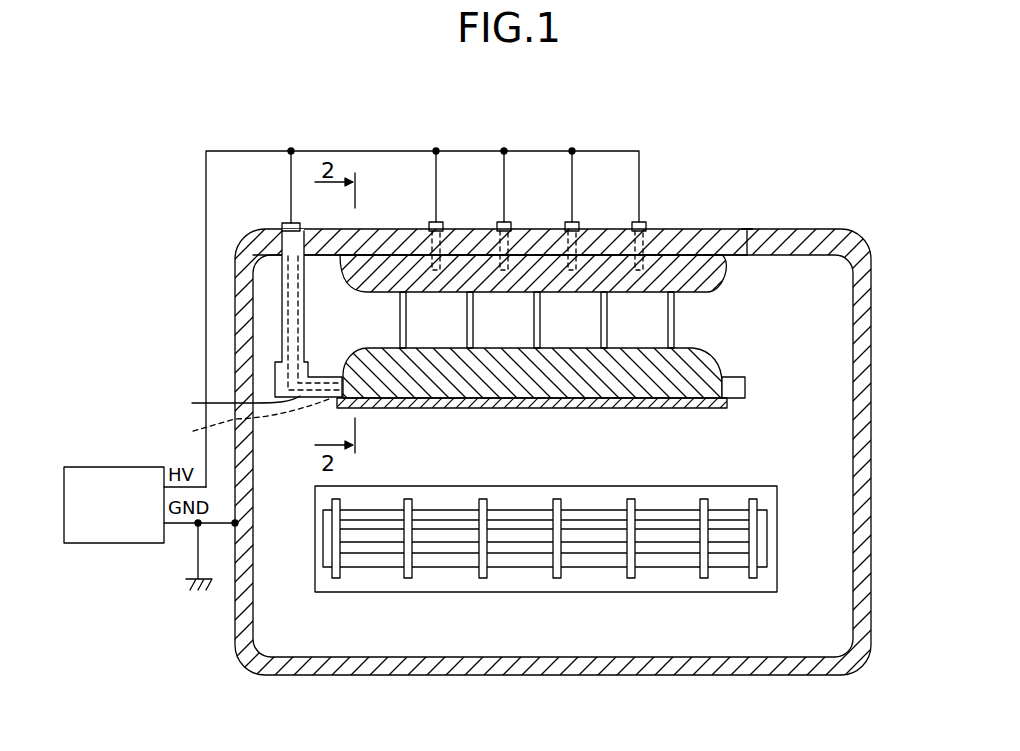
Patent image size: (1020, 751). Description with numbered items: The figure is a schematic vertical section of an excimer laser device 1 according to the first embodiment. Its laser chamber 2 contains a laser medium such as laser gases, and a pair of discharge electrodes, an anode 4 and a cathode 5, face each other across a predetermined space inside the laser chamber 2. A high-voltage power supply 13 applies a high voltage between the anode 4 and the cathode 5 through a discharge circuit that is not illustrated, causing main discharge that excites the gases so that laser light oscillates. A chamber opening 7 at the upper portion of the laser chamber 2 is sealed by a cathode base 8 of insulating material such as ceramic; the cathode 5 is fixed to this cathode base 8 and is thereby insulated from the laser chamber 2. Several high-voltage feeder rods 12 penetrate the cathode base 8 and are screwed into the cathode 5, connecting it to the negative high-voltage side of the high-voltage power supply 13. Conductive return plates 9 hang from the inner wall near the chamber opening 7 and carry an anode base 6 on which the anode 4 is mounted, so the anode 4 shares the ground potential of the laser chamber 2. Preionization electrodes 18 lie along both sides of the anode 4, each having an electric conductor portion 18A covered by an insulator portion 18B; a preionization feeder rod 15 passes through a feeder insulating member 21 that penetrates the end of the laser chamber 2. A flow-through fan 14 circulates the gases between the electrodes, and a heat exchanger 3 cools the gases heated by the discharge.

The excimer laser device 1 is at (847, 176).
The laser chamber 2 is at (872, 372).
The heat exchanger 3 is at (778, 585).
The anode 4 is at (716, 357).
The cathode 5 is at (712, 270).
The anode base 6 is at (712, 409).
The chamber opening 7 is at (748, 236).
The cathode base 8 is at (606, 246).
The return plates 9 is at (674, 312).
The high-voltage feeder rod 12 is at (646, 222).
The high-voltage power supply 13 is at (84, 545).
The flow-through fan 14 is at (767, 520).
The preionization feeder rod 15 is at (287, 222).
The preionization electrode 18 is at (222, 419).
The electric conductor portion 18A is at (150, 397).
The insulator portion 18B is at (225, 406).
The feeder insulating member 21 is at (305, 312).